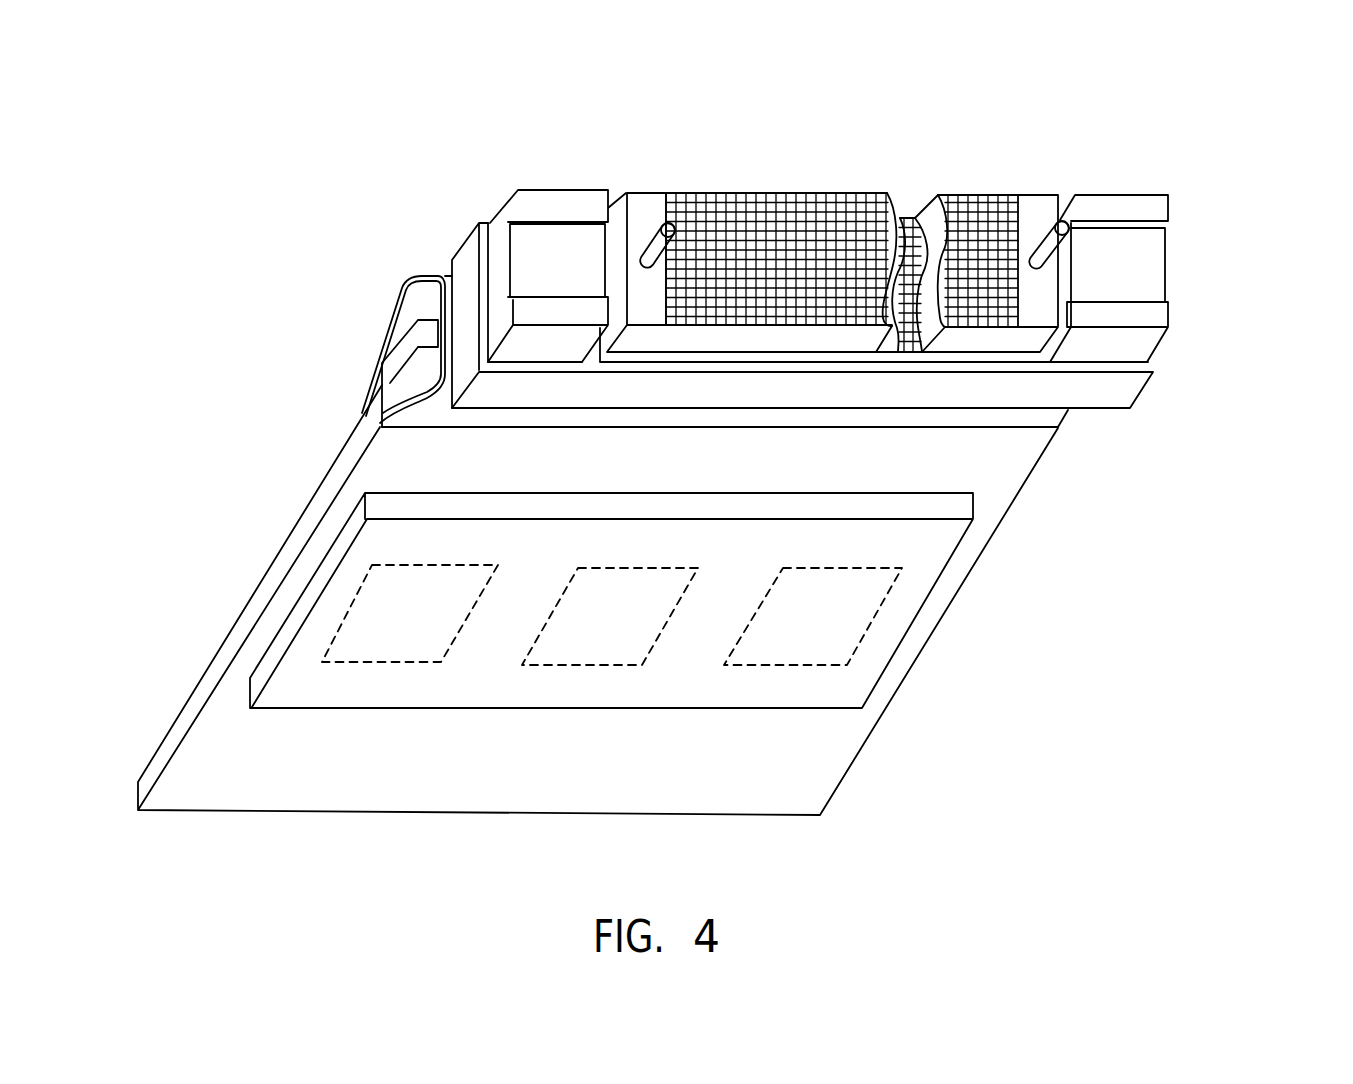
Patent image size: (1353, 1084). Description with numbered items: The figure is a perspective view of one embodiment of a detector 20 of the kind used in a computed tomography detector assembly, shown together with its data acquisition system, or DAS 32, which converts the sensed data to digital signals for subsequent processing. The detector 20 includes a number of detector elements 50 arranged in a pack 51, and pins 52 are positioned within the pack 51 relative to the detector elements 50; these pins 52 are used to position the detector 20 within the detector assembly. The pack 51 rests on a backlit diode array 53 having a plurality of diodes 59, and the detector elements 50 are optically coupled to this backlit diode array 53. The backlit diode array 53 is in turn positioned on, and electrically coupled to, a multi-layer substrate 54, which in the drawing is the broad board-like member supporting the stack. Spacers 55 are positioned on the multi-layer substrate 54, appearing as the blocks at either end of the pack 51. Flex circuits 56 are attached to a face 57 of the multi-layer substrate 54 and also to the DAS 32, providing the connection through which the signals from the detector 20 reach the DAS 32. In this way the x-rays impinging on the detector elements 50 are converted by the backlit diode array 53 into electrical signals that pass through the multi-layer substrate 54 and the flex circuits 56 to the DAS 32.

The detector 20 is at (810, 266).
The data acquisition system (DAS) 32 is at (920, 630).
The detector elements 50 is at (757, 207).
The pack 51 is at (666, 168).
The pins 52 is at (658, 233).
The backlit diode array 53 is at (1013, 363).
The multi-layer substrate 54 is at (1128, 394).
The spacers 55 is at (552, 192).
The flex circuits 56 is at (408, 392).
The face 57 is at (450, 264).
The diodes 59 is at (910, 218).